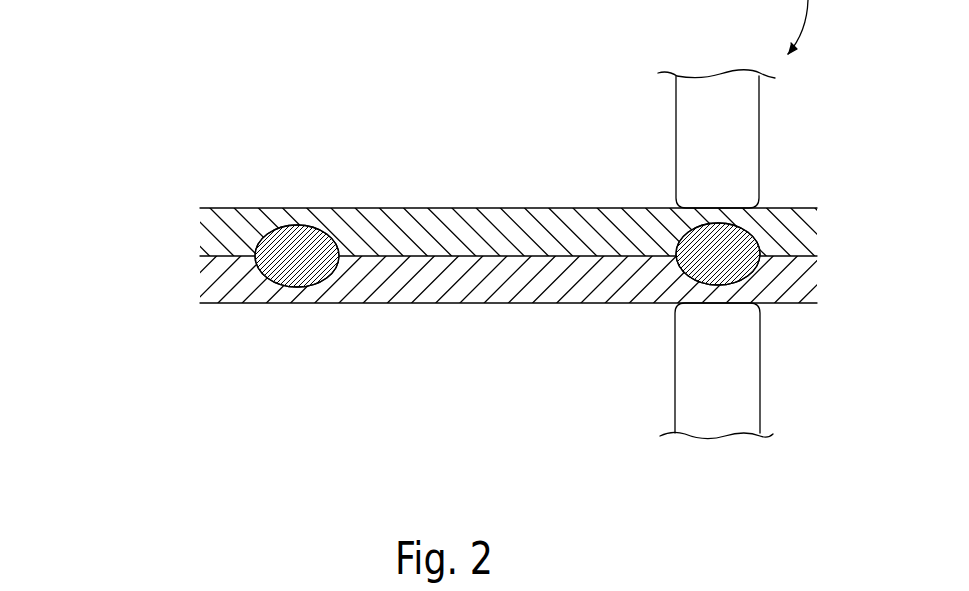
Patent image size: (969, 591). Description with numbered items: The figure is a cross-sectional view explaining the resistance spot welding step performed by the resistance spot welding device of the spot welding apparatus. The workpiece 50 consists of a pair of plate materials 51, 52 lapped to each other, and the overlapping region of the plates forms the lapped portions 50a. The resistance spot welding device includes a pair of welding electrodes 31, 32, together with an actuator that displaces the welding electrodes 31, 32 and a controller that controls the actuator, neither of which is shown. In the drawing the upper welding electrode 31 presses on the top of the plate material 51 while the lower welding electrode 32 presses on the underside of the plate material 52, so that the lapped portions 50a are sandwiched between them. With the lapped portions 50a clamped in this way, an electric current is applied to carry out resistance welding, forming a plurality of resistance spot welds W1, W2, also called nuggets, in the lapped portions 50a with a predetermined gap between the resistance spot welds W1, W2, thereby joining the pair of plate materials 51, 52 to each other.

The workpiece 50 is at (466, 252).
The lapped portions 50a is at (433, 208).
The plate material 51 is at (225, 207).
The plate material 52 is at (495, 290).
The welding electrode 31 is at (759, 120).
The welding electrode 32 is at (760, 372).
The resistance spot weld W1 is at (310, 287).
The resistance spot weld W2 is at (672, 289).